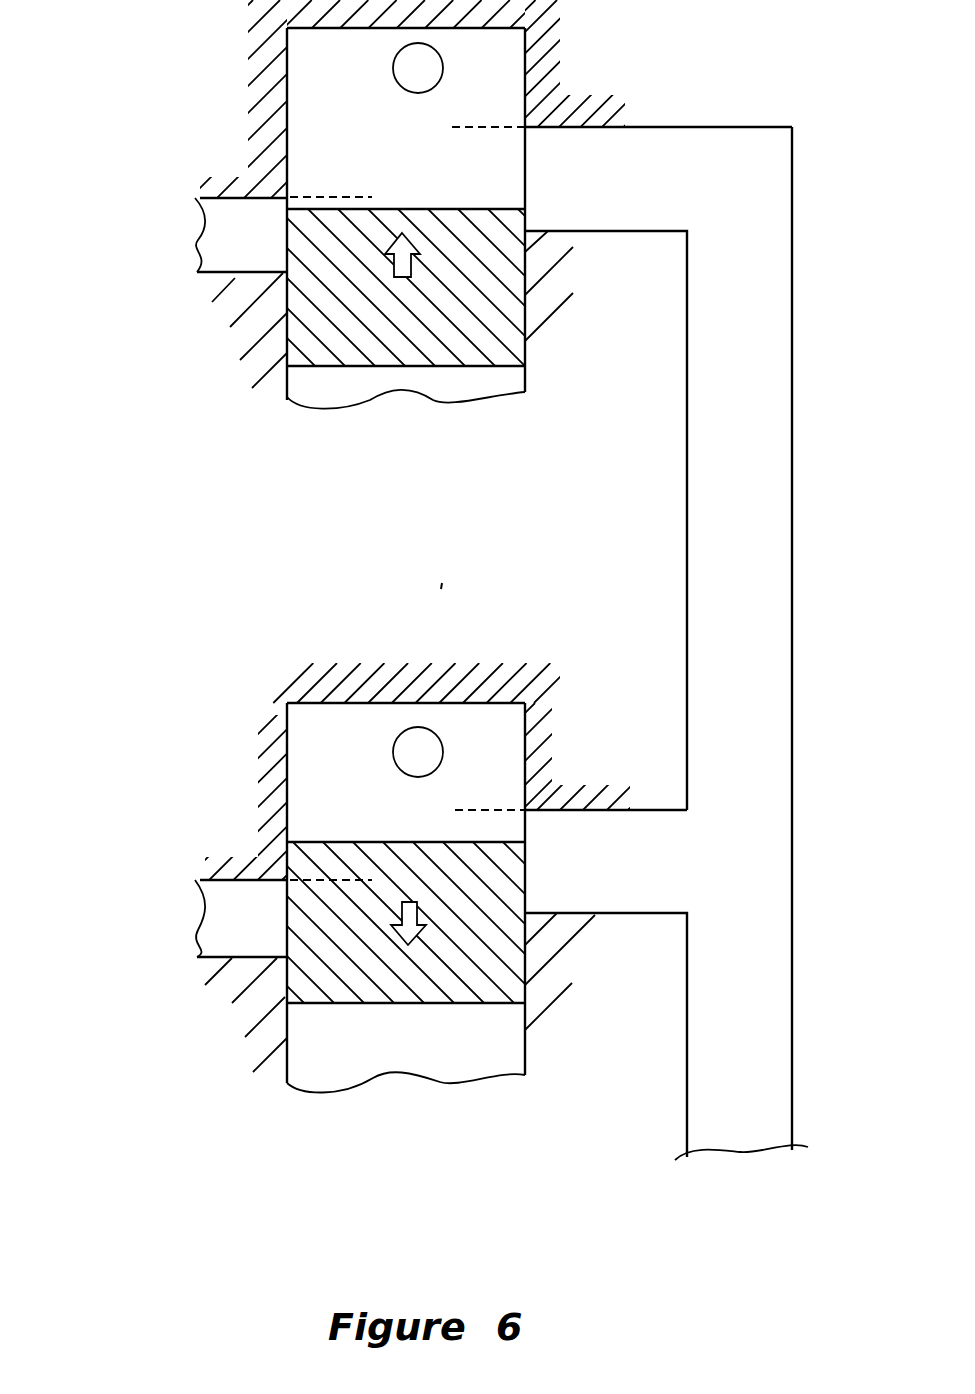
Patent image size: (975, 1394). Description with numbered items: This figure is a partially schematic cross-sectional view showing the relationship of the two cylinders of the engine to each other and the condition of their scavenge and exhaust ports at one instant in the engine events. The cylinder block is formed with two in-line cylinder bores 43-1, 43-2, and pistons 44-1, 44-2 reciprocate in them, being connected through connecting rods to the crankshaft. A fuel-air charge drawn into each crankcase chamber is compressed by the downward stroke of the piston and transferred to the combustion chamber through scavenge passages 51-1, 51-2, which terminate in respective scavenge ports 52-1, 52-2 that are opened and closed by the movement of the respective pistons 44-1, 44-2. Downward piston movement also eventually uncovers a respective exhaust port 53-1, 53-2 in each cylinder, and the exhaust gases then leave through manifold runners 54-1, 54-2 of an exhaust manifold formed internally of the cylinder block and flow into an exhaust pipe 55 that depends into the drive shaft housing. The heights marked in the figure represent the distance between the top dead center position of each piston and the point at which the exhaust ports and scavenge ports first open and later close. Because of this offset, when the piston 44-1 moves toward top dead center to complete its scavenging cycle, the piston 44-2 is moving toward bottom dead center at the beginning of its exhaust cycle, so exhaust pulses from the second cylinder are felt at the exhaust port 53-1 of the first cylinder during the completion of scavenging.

The cylinder bore 43-1 is at (288, 79).
The piston 44-1 is at (418, 340).
The scavenge passage 51-1 is at (212, 240).
The scavenge port 52-1 is at (299, 199).
The exhaust port 53-1 is at (525, 128).
The manifold runner 54-1 is at (628, 147).
The exhaust pipe 55 is at (795, 427).
The cylinder bore 43-2 is at (272, 745).
The piston 44-2 is at (405, 998).
The scavenge passage 51-2 is at (227, 944).
The scavenge port 52-2 is at (287, 884).
The exhaust port 53-2 is at (525, 812).
The manifold runner 54-2 is at (641, 820).